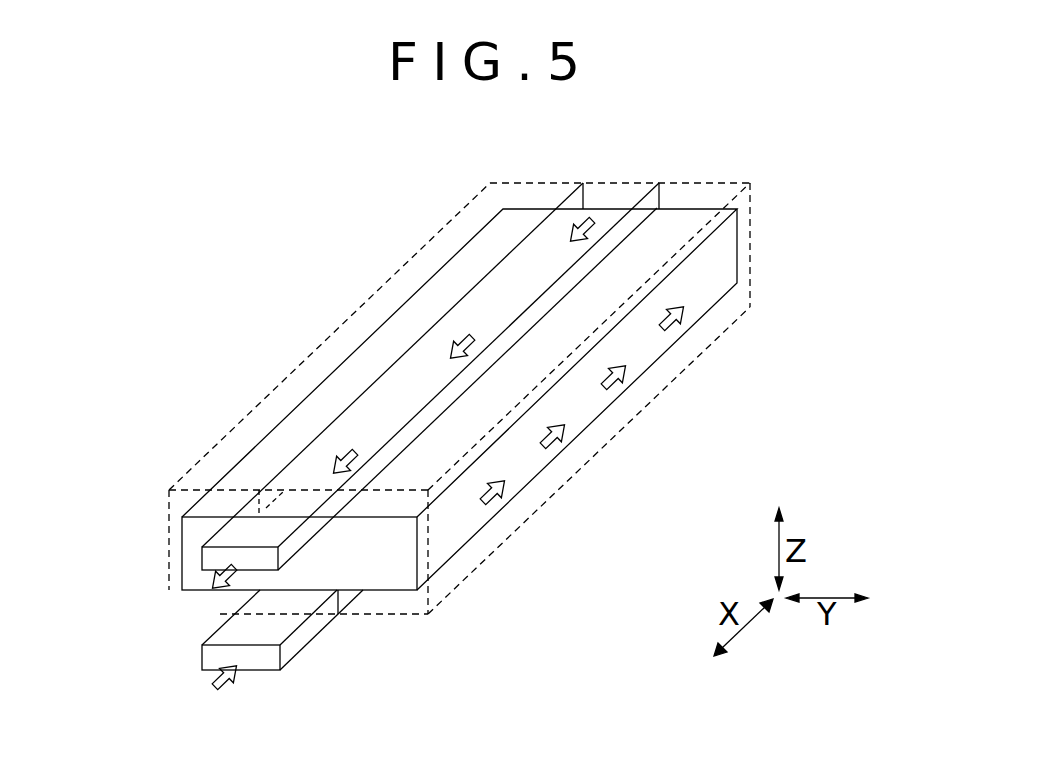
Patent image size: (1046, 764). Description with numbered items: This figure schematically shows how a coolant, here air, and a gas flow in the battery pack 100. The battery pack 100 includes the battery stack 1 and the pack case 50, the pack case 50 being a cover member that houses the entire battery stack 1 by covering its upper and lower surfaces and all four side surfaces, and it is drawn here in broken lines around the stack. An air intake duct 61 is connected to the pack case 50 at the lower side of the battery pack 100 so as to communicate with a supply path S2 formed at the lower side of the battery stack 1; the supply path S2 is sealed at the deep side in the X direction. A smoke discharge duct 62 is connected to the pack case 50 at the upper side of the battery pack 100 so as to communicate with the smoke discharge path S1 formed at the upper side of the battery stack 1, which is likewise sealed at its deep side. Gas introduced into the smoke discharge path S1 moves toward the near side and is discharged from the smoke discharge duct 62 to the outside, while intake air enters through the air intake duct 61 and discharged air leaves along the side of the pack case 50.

The battery pack 100 is at (332, 282).
The battery stack 1 is at (262, 414).
The smoke discharge duct 62 is at (225, 536).
The air intake duct 61 is at (298, 644).
The pack case 50 is at (610, 448).
The smoke discharge path S1 is at (490, 284).
The supply path S2 is at (346, 603).